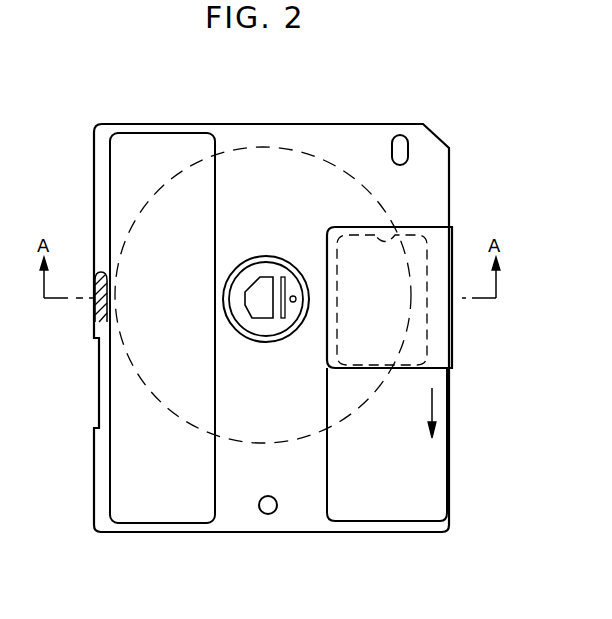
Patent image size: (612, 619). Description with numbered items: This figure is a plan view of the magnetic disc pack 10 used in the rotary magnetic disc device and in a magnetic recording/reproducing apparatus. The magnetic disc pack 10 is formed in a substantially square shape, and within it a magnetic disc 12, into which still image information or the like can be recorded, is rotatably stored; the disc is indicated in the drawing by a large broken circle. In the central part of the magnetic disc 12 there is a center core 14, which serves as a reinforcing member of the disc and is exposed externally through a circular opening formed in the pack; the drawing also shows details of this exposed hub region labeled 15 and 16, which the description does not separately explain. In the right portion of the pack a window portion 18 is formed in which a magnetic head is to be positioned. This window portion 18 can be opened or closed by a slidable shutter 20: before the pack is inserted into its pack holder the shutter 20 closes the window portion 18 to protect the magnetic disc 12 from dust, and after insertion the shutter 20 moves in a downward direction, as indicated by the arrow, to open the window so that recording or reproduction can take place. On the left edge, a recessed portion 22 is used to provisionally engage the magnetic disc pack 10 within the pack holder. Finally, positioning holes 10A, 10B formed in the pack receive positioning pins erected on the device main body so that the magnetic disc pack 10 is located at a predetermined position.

The magnetic disc pack 10 is at (306, 123).
The positioning hole 10A is at (408, 143).
The positioning hole 10B is at (268, 514).
The magnetic disc 12 is at (348, 172).
The center core 14 is at (259, 270).
The drive hole 15 is at (263, 306).
The hub ring 16 is at (291, 268).
The window portion 18 is at (396, 236).
The shutter 20 is at (440, 250).
The recessed portion 22 is at (96, 300).